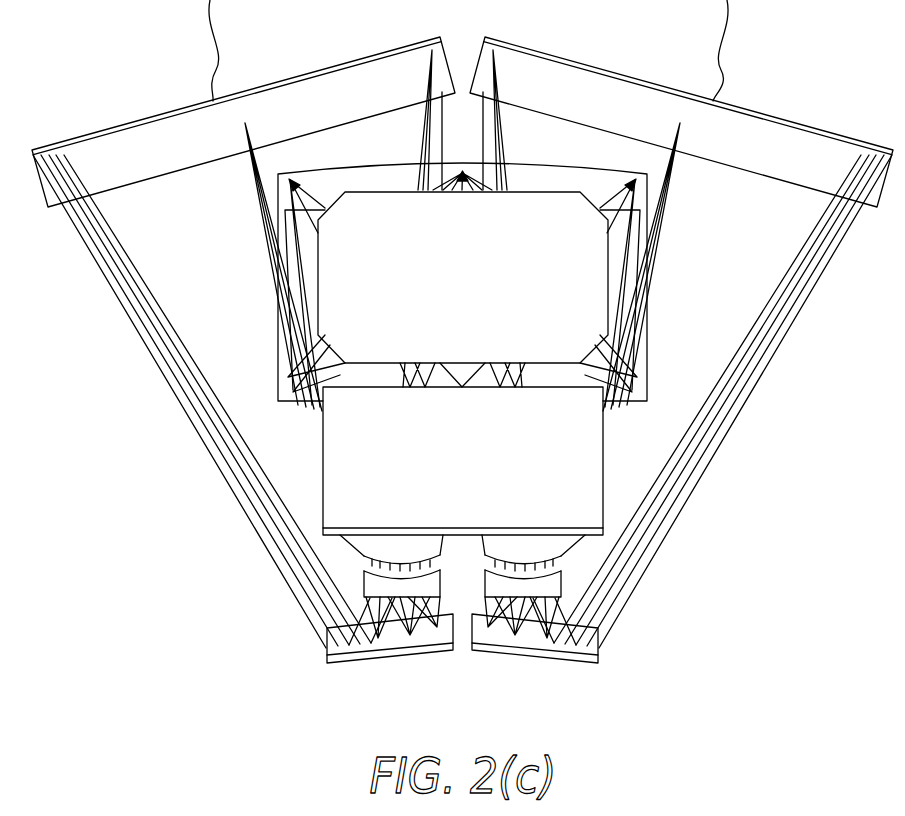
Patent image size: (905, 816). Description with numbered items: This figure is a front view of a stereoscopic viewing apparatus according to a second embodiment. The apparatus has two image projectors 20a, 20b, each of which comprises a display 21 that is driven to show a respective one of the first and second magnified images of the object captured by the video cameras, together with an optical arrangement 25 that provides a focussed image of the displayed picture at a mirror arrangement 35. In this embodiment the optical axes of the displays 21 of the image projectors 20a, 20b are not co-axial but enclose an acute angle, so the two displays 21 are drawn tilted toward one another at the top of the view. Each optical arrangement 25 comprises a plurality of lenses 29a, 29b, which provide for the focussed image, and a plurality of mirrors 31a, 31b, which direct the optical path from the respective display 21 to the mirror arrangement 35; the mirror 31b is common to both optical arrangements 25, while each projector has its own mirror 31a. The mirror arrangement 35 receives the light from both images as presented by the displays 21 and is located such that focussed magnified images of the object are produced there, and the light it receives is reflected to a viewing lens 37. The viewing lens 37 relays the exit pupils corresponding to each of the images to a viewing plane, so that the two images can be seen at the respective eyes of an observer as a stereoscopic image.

The display 21 is at (135, 108).
The mirror arrangement 35 is at (654, 318).
The viewing lens 37 is at (323, 274).
The mirror 31b is at (590, 492).
The mirror 31a is at (410, 657).
The lens 29b is at (372, 544).
The lens 29a is at (373, 582).
The optical arrangement 25 is at (321, 650).
The image projector 20a is at (583, 673).
The image projector 20b is at (342, 673).